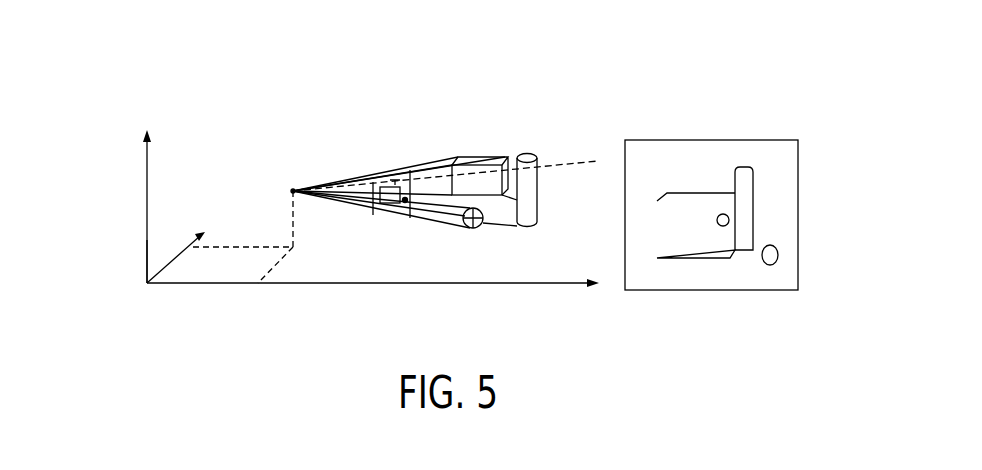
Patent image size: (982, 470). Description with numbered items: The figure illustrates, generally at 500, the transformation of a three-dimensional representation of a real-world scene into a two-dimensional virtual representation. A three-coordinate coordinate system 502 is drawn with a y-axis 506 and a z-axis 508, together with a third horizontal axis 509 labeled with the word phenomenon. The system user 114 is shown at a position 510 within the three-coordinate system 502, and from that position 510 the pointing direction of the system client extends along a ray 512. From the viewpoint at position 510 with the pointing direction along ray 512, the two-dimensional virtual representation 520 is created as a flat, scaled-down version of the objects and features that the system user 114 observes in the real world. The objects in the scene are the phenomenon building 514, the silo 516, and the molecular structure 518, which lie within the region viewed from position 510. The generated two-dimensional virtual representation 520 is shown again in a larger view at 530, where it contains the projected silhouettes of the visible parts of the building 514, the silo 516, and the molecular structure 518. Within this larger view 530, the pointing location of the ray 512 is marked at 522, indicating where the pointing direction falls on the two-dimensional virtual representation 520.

The system user 114 is at (291, 190).
The transformation of 3-D representation to 2-D virtual representation 500 is at (240, 58).
The three-coordinate coordinate system 502 is at (118, 160).
The y-axis 506 is at (172, 260).
The z-axis 508 is at (147, 237).
The x axis 509 is at (318, 283).
The position 510 is at (302, 172).
The ray 512 is at (318, 200).
The phenomenon building 514 is at (477, 156).
The silo 516 is at (540, 200).
The molecular structure 518 is at (463, 225).
The 2-D virtual representation 520 is at (407, 171).
The pointing location of ray 522 is at (722, 228).
The larger view of 2-D virtual representation 530 is at (685, 118).